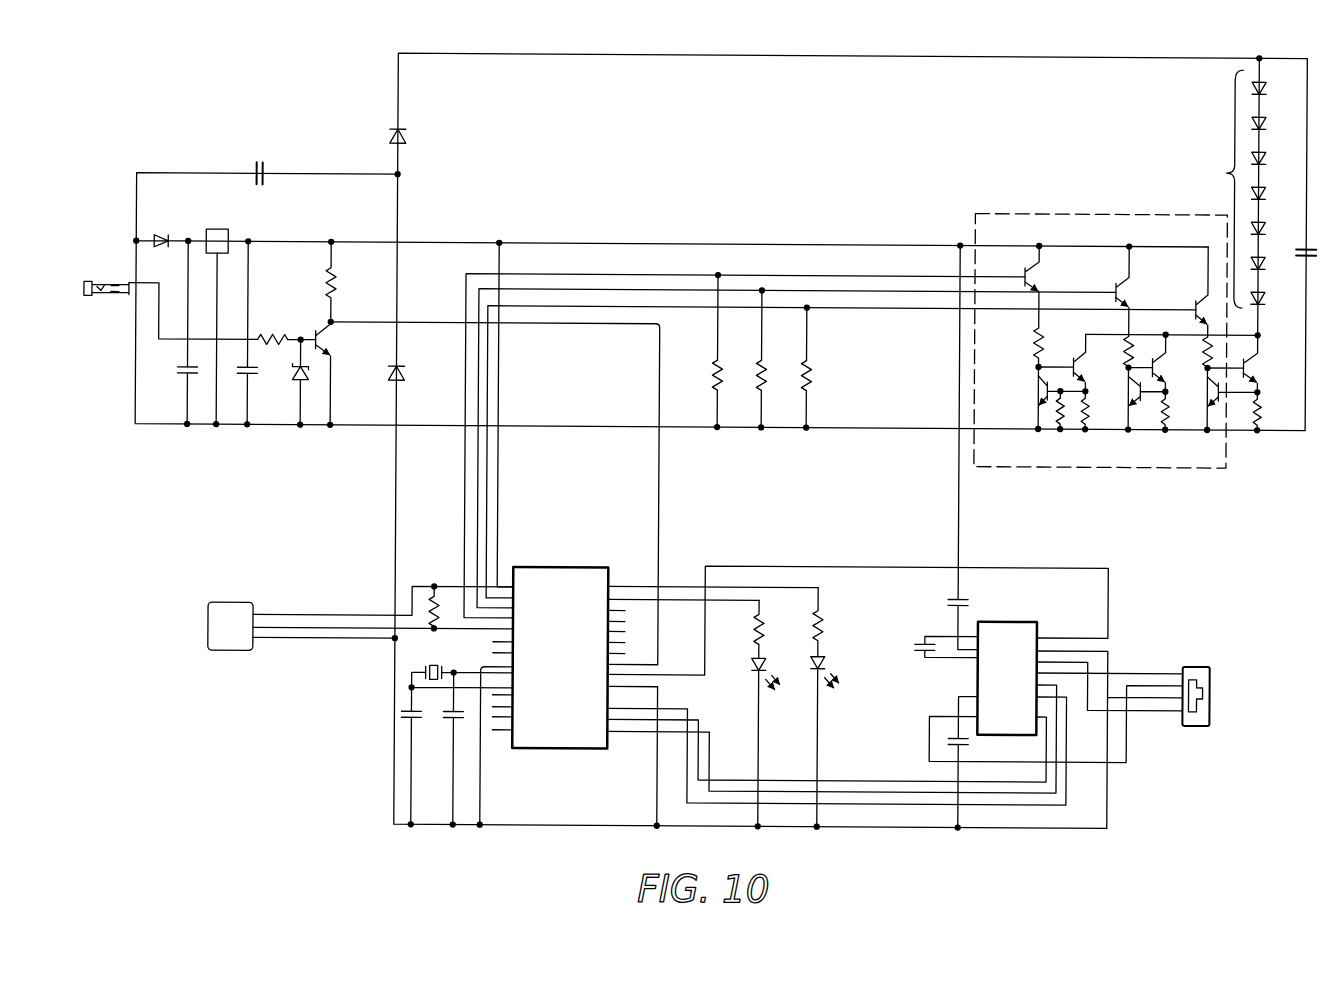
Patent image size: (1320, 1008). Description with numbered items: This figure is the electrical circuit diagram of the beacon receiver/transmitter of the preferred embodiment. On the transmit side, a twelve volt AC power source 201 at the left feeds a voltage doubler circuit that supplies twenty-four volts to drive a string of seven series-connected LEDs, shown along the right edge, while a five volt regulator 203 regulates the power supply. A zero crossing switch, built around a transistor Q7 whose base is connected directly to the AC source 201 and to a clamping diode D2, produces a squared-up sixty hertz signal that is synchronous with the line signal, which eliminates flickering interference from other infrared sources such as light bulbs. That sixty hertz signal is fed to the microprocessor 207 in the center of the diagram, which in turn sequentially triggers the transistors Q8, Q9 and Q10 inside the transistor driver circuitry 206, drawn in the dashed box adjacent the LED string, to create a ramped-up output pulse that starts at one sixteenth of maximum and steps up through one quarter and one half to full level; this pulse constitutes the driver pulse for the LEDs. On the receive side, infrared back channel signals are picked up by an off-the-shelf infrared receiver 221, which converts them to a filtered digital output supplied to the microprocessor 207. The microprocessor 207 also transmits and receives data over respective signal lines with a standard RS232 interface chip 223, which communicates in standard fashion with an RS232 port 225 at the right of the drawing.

The AC power source 201 is at (89, 285).
The voltage regulator 203 is at (232, 214).
The transistor driver circuitry 206 is at (1118, 310).
The microprocessor 207 is at (755, 697).
The infrared receiver 221 is at (244, 605).
The RS232 interface chip 223 is at (1010, 620).
The RS232 port 225 is at (1196, 664).
The transistor Q7 is at (320, 328).
The clamping diode D2 is at (294, 377).
The transistor Q8 is at (1036, 275).
The transistor Q9 is at (1129, 287).
The transistor Q10 is at (1199, 305).